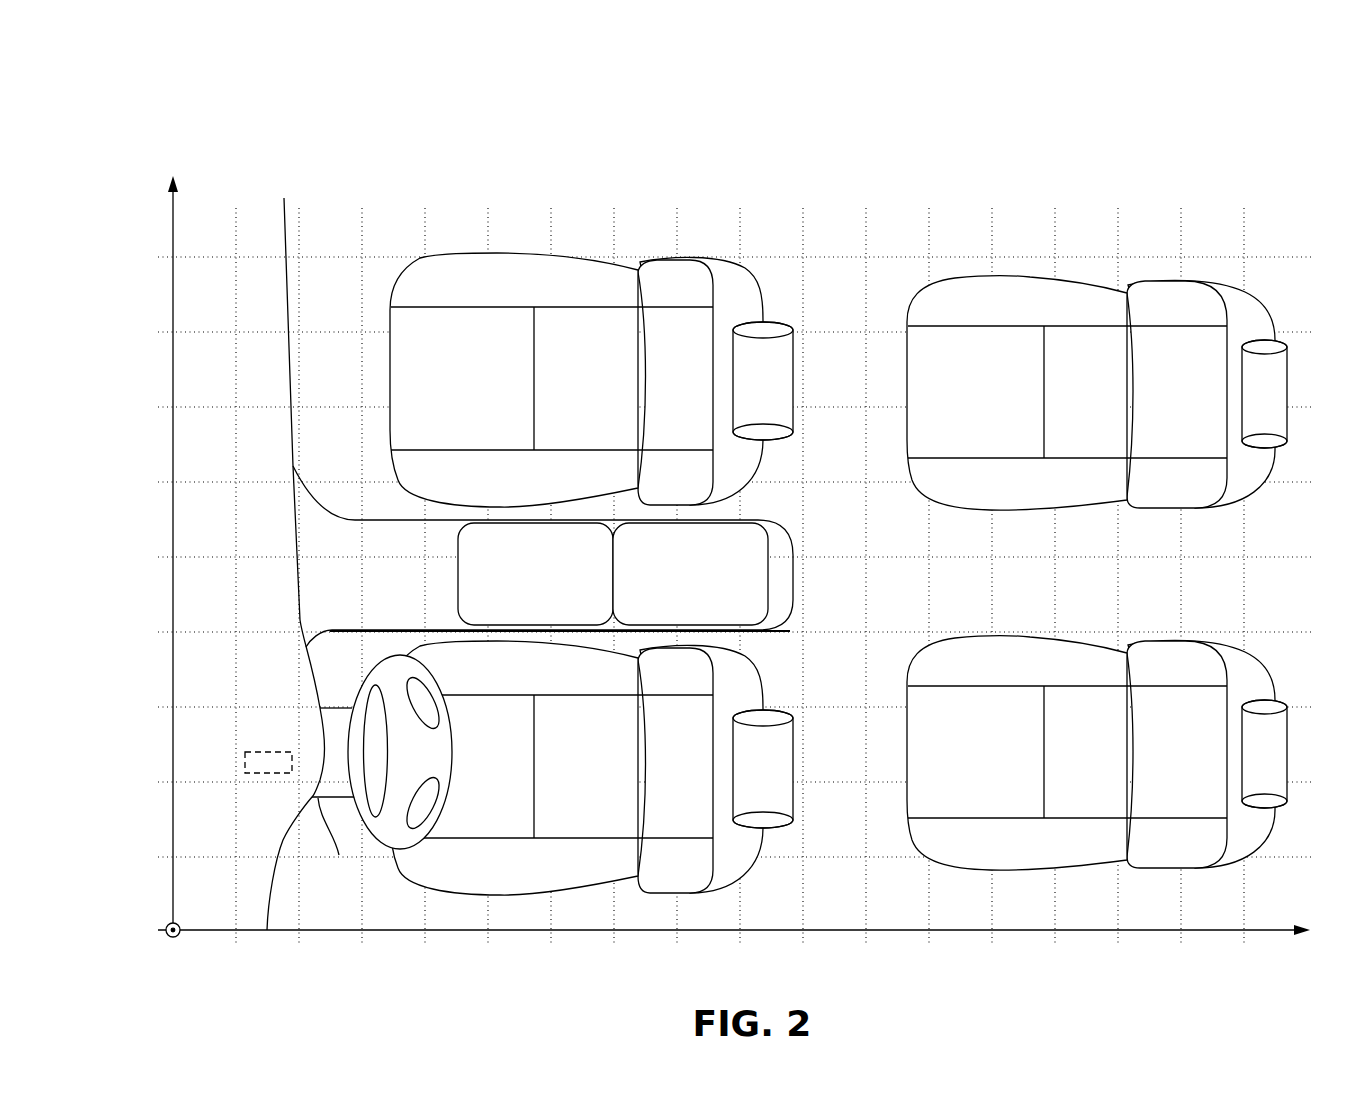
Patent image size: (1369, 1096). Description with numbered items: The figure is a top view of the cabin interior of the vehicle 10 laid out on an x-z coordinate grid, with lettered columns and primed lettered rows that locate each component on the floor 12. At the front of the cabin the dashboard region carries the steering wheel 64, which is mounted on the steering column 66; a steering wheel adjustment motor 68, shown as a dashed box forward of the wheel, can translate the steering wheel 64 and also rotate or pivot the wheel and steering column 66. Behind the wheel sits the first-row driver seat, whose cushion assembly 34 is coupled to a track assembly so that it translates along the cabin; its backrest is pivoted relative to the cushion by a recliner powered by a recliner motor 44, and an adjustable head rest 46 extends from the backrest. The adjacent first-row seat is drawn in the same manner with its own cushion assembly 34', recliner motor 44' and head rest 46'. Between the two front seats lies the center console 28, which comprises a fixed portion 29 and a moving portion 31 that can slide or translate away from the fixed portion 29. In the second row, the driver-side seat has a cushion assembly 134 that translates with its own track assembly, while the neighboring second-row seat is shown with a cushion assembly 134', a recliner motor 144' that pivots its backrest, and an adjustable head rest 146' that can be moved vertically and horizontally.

The vehicle 10 is at (201, 160).
The floor 12 is at (570, 580).
The center console 28 is at (607, 636).
The fixed portion 29 is at (535, 574).
The moving portion 31 is at (690, 574).
The cushion assembly 34 is at (551, 768).
The cushion assembly 34' is at (551, 380).
The recliner motor 44 is at (741, 777).
The recliner motor 44' is at (741, 383).
The head rest 46 is at (797, 769).
The head rest 46' is at (796, 381).
The steering wheel 64 is at (453, 760).
The steering column 66 is at (334, 842).
The steering wheel adjustment motor 68 is at (278, 750).
The cushion assembly 134 is at (1067, 753).
The cushion assembly 134' is at (1067, 393).
The recliner motor 144' is at (1248, 580).
The head rest 146' is at (1305, 574).